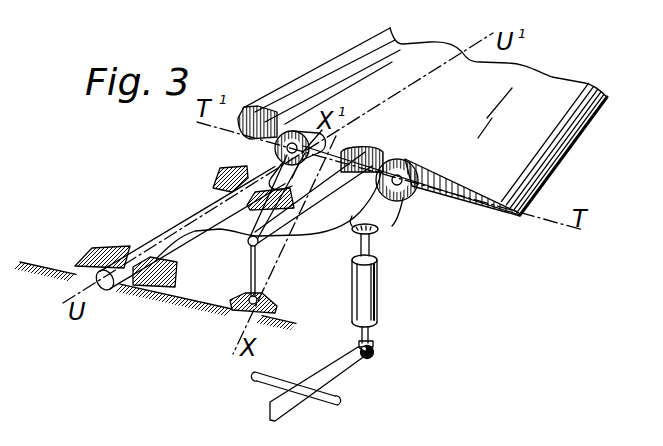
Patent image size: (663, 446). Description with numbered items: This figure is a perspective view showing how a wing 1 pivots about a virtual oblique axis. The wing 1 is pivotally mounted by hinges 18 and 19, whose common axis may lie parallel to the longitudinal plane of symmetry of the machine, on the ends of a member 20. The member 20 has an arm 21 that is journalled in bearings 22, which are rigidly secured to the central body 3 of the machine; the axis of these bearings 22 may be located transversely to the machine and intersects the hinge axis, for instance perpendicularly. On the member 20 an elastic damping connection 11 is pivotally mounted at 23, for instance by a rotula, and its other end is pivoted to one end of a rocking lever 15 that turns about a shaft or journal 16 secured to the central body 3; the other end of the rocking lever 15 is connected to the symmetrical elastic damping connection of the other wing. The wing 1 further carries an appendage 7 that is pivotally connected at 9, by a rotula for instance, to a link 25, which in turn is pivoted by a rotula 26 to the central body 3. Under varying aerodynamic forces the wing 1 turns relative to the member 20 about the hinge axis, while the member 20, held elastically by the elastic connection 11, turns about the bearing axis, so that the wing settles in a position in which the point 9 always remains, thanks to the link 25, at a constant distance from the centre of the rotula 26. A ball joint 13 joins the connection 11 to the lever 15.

The wing 1 is at (552, 90).
The central body 3 is at (30, 259).
The appendage 7 is at (325, 190).
The pivot connection 9 is at (249, 245).
The elastic damping connection 11 is at (366, 290).
The ball joint 13 is at (372, 352).
The rocking lever 15 is at (320, 380).
The shaft or journal 16 is at (335, 397).
The hinge 18 is at (278, 134).
The hinge 19 is at (399, 183).
The member 20 is at (274, 181).
The arm 21 is at (171, 226).
The bearings 22 is at (231, 168).
The pivot mounting 23 is at (372, 229).
The link 25 is at (249, 278).
The rotula 26 is at (244, 306).